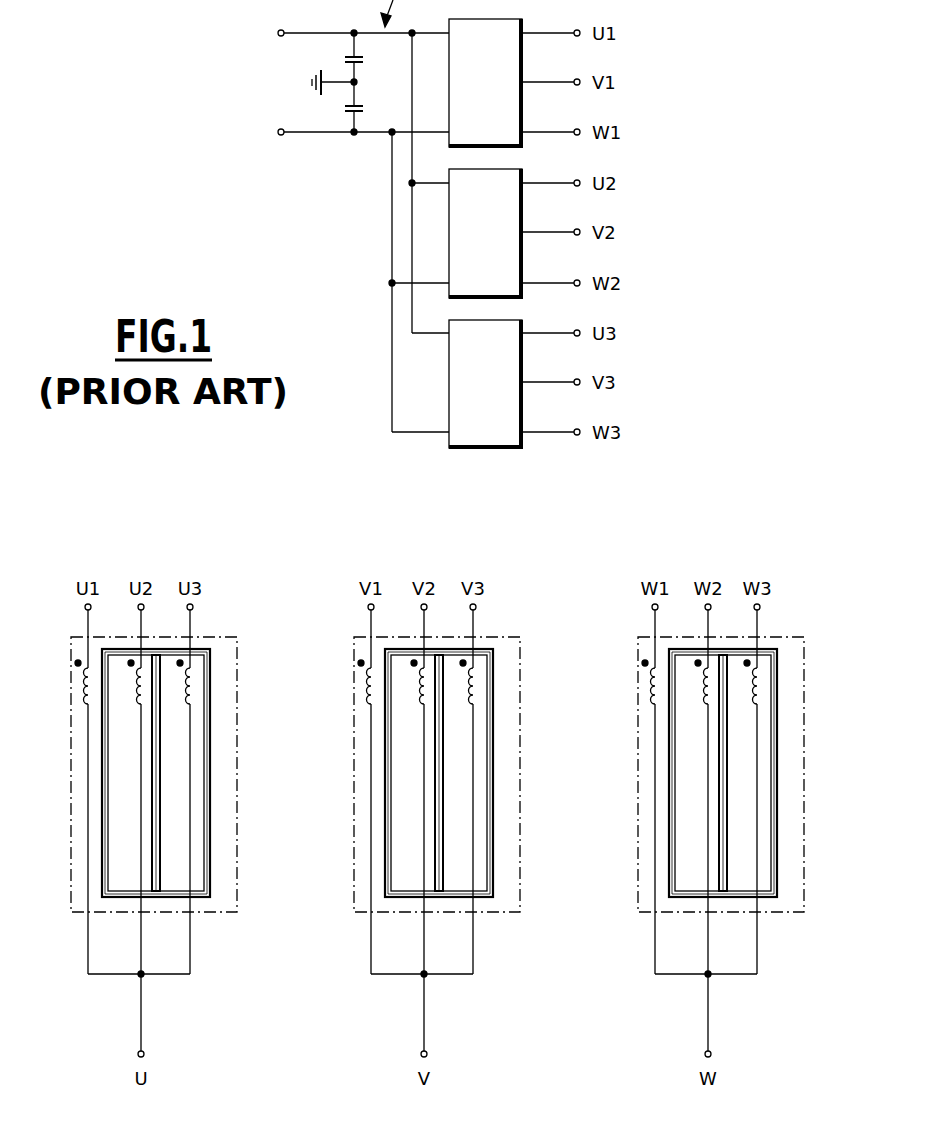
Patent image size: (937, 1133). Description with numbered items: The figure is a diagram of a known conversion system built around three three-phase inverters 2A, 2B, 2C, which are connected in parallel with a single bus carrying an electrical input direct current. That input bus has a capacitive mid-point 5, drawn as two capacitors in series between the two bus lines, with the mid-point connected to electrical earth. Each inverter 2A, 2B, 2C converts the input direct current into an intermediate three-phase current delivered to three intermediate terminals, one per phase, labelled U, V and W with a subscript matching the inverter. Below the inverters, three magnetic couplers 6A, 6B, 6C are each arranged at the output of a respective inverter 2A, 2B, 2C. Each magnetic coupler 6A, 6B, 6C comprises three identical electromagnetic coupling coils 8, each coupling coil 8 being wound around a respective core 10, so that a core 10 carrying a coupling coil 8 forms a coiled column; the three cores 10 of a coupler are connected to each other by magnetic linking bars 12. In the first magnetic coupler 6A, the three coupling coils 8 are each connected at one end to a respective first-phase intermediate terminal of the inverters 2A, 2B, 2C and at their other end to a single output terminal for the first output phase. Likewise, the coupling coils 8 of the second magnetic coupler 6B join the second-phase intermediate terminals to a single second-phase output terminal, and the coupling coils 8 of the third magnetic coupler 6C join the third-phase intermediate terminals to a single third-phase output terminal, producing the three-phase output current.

The three-phase inverter 2A is at (486, 83).
The three-phase inverter 2B is at (486, 233).
The three-phase inverter 2C is at (486, 384).
The capacitive mid-point 5 is at (357, 82).
The magnetic coupler 6A is at (238, 645).
The magnetic coupler 6B is at (521, 645).
The magnetic coupler 6C is at (805, 645).
The electromagnetic coupling coil 8 is at (183, 706).
The core 10 is at (203, 833).
The magnetic linking bar 12 is at (203, 648).